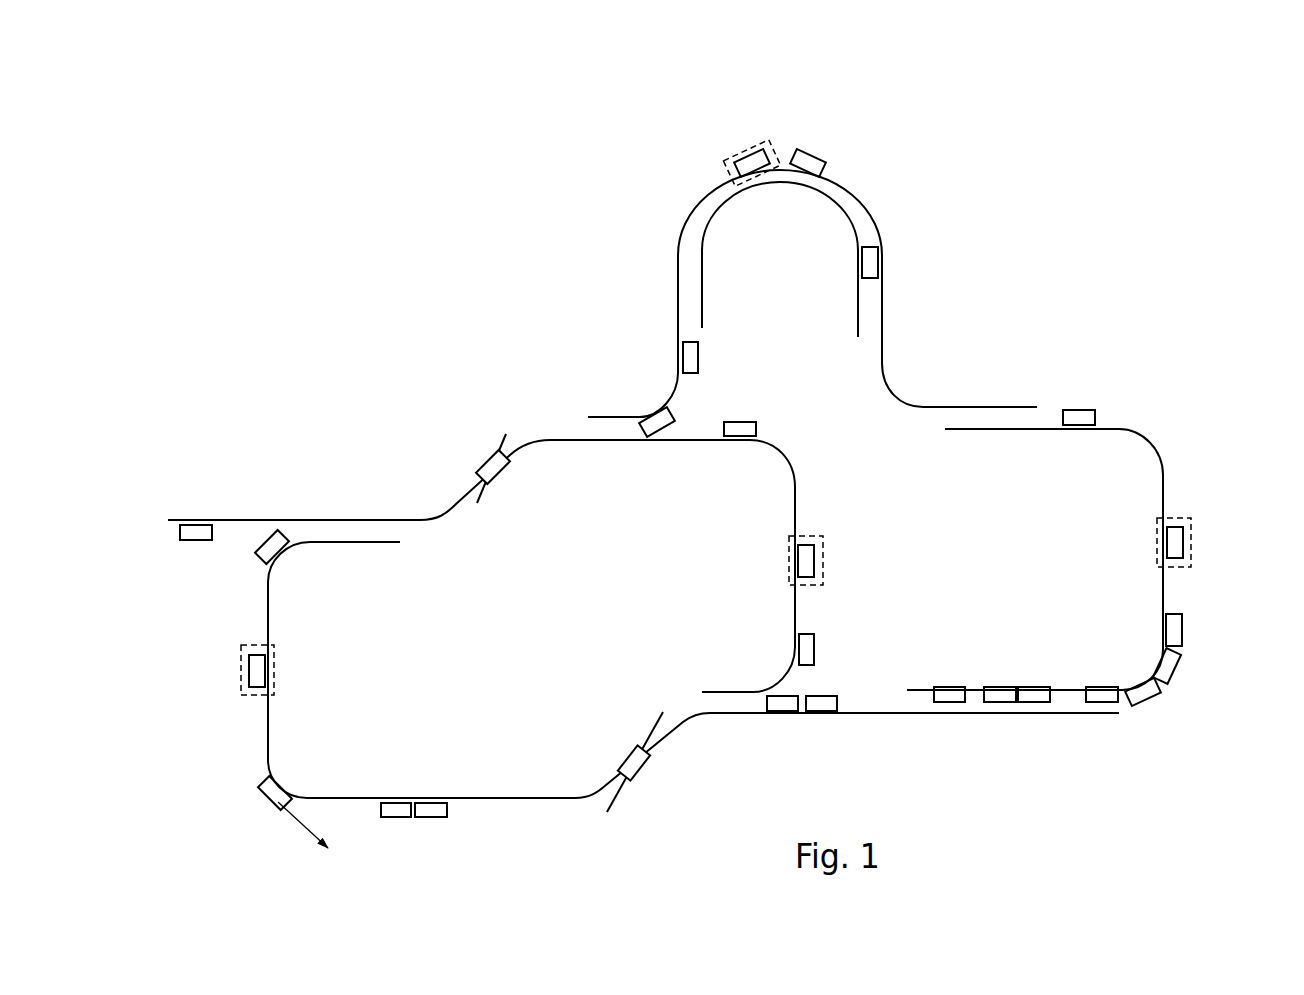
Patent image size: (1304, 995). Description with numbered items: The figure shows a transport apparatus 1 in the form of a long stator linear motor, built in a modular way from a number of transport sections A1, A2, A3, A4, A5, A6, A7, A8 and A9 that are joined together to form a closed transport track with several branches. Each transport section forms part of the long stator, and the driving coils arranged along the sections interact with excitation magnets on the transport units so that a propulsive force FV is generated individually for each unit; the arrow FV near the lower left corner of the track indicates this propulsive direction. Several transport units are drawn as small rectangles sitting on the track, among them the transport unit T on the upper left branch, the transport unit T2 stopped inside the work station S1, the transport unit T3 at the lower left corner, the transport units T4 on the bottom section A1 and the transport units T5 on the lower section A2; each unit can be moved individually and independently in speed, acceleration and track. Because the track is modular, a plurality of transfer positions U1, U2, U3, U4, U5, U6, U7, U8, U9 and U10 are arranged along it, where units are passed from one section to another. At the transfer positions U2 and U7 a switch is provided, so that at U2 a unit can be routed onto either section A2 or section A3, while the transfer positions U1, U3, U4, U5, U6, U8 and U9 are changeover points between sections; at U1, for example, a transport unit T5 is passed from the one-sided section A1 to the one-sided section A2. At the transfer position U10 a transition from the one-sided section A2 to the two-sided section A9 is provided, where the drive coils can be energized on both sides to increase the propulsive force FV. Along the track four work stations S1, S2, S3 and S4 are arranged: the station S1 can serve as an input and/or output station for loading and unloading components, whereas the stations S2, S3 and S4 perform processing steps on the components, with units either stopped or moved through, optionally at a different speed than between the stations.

The transport apparatus 1 is at (940, 727).
The transport section A1 is at (518, 800).
The transport section A2 is at (872, 715).
The transport section A3 is at (796, 500).
The transport section A4 is at (1166, 472).
The transport section A5 is at (883, 333).
The transport section A6 is at (847, 202).
The transport section A7 is at (677, 282).
The transport section A8 is at (352, 518).
The transport section A9 is at (1027, 677).
The transport unit T is at (190, 530).
The transport unit T2 is at (260, 669).
The transport unit T3 is at (275, 792).
The transport unit T4 is at (405, 810).
The transport unit T5 is at (783, 705).
The transfer position U1 is at (660, 765).
The transfer position U2 is at (731, 677).
The transfer position U3 is at (1078, 728).
The transfer position U4 is at (980, 392).
The transfer position U5 is at (898, 248).
The transfer position U6 is at (670, 310).
The transfer position U7 is at (643, 455).
The transfer position U8 is at (478, 453).
The transfer position U9 is at (272, 515).
The transfer position U10 is at (950, 675).
The work station S1 is at (240, 655).
The work station S2 is at (822, 562).
The work station S3 is at (1183, 542).
The work station S4 is at (725, 155).
The propulsive force FV is at (303, 834).